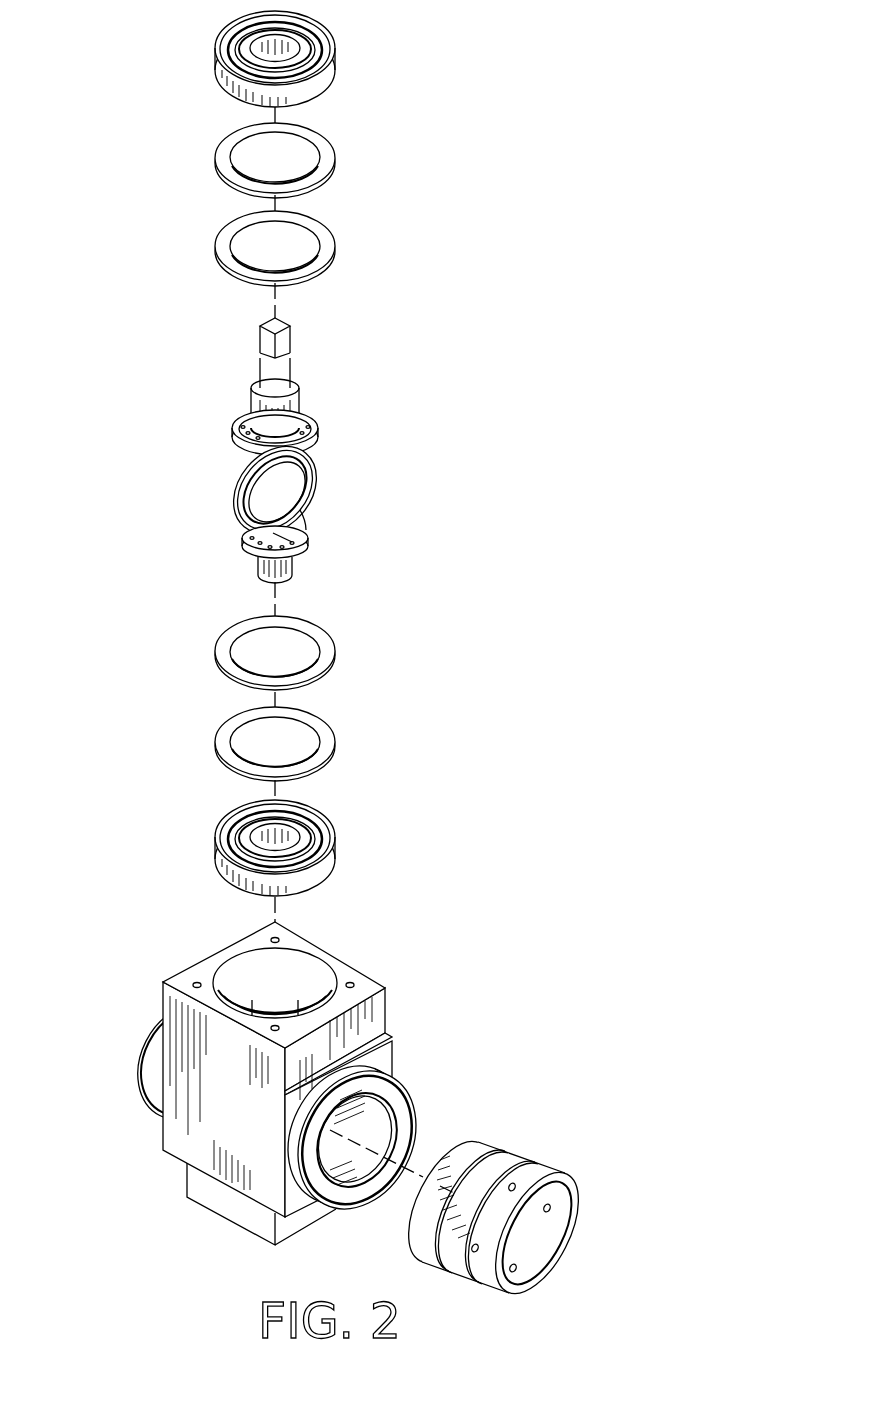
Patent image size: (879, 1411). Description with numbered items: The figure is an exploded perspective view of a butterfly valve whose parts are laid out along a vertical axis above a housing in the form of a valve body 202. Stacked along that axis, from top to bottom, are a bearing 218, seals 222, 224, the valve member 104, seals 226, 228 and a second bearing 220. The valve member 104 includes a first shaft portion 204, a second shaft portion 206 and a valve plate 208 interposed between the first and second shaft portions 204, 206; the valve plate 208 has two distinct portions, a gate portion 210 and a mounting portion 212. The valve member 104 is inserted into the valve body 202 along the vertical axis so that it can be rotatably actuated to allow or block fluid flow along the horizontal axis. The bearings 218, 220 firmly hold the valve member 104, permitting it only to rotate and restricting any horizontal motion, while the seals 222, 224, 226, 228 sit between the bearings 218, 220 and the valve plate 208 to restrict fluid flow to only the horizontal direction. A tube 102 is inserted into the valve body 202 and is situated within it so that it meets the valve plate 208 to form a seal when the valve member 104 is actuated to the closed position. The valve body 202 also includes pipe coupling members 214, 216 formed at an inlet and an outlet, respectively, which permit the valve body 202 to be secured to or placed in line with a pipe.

The tube 102 is at (497, 1160).
The valve member 104 is at (209, 391).
The valve body 202 is at (317, 978).
The first shaft portion 204 is at (302, 398).
The second shaft portion 206 is at (255, 563).
The valve plate 208 is at (280, 480).
The gate portion 210 is at (233, 493).
The mounting portion 212 is at (295, 522).
The pipe coupling member 214 is at (413, 1093).
The pipe coupling member 216 is at (142, 1042).
The bearing 218 is at (337, 68).
The bearing 220 is at (333, 857).
The seal 222 is at (337, 163).
The seal 224 is at (335, 235).
The seal 226 is at (335, 660).
The seal 228 is at (335, 735).